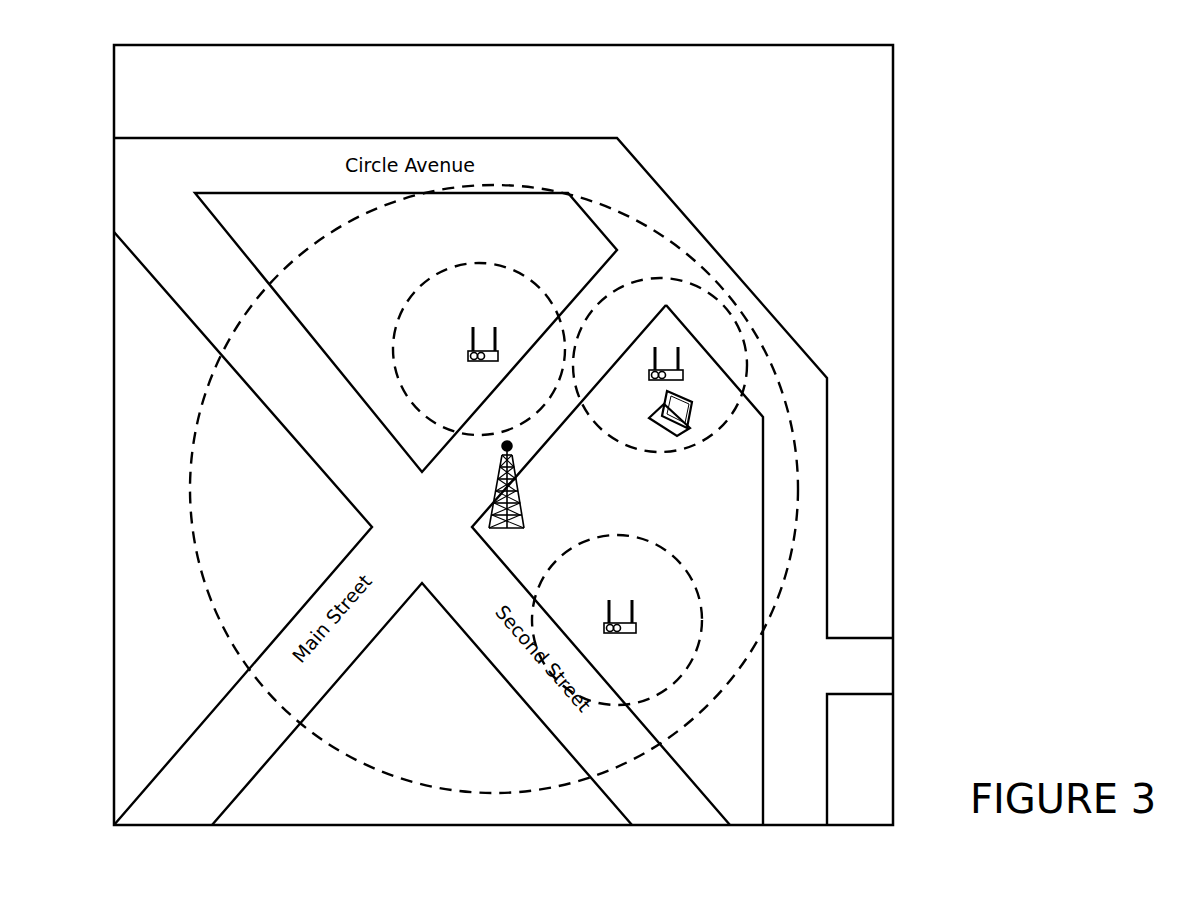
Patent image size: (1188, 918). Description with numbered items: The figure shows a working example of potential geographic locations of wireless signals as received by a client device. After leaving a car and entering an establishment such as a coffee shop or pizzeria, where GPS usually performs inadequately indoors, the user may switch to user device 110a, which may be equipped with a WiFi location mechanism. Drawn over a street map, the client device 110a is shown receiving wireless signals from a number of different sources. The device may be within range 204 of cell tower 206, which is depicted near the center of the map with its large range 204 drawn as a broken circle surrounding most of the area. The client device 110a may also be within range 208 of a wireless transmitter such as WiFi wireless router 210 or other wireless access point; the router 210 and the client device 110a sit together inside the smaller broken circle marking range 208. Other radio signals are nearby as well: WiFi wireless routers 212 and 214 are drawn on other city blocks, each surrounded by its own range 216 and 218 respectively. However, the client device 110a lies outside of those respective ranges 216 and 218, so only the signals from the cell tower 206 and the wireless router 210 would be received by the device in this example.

The user device 110a is at (694, 413).
The range of cell tower 204 is at (798, 489).
The cell tower 206 is at (517, 487).
The range of wireless router 208 is at (747, 362).
The WiFi wireless router 210 is at (683, 377).
The WiFi wireless router 212 is at (468, 355).
The WiFi wireless router 214 is at (636, 632).
The range of wireless router 216 is at (412, 413).
The range of wireless router 218 is at (702, 625).